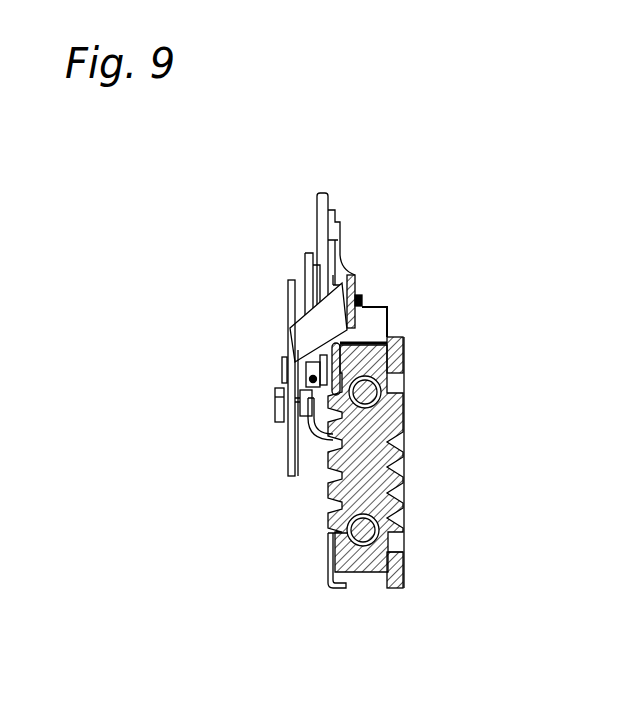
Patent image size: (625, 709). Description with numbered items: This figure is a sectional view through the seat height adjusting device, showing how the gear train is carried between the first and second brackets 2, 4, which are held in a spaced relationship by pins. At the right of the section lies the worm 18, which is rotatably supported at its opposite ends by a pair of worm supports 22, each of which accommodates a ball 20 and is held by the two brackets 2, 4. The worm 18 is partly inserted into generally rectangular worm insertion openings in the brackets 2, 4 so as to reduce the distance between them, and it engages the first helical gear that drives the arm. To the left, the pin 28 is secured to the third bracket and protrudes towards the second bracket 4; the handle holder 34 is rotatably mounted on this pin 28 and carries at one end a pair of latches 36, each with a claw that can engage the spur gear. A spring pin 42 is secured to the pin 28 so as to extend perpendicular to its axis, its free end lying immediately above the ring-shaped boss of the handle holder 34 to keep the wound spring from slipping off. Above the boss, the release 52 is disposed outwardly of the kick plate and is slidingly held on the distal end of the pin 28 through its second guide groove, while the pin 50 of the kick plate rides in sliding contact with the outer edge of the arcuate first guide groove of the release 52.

The first bracket 2 is at (407, 573).
The second bracket 4 is at (337, 590).
The worm 18 is at (405, 488).
The ball 20 is at (405, 403).
The worm support 22 is at (407, 360).
The pin 28 is at (287, 368).
The handle holder 34 is at (345, 263).
The latch 36 is at (320, 214).
The spring pin 42 is at (280, 388).
The pin 50 is at (275, 410).
The release 52 is at (290, 340).